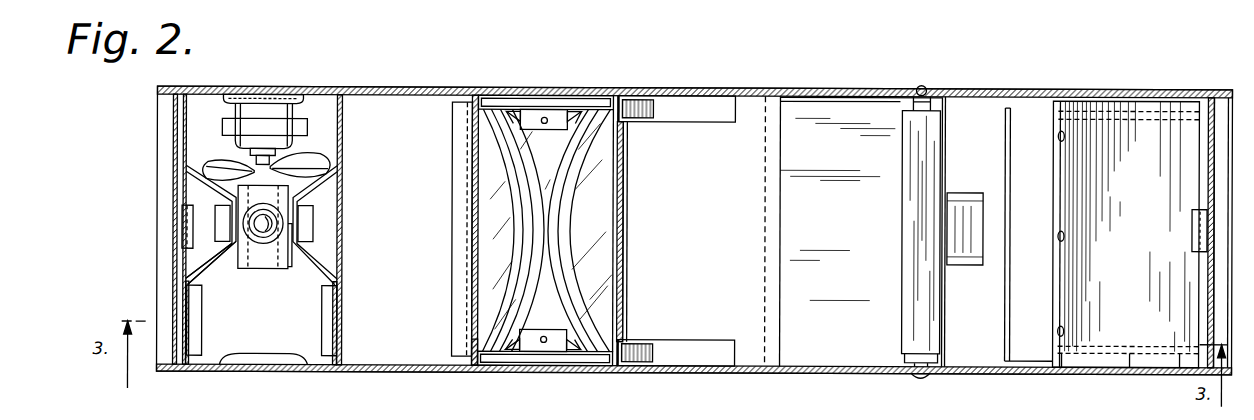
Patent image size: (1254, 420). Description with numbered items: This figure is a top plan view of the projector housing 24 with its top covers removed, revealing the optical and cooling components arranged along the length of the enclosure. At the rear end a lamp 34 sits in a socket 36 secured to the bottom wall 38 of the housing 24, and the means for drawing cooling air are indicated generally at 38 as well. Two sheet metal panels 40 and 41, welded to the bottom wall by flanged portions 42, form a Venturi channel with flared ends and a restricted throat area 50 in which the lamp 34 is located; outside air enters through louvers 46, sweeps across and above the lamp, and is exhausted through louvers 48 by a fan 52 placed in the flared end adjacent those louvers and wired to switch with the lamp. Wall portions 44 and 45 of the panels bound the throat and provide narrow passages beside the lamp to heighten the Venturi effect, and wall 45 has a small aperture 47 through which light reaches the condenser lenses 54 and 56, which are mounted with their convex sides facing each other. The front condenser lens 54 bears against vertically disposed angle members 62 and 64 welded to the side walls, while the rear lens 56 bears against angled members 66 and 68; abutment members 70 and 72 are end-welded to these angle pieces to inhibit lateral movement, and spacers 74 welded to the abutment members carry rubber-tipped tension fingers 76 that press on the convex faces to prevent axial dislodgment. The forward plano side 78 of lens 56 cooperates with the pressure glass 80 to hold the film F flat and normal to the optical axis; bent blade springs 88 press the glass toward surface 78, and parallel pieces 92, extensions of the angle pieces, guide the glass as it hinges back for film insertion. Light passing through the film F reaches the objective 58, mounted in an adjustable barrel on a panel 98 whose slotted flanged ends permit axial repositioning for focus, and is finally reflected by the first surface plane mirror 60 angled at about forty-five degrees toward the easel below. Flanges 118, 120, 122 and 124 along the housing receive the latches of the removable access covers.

The projector housing 24 is at (842, 82).
The lamp 34 is at (262, 240).
The socket 36 is at (285, 197).
The bottom wall / air-current means 38 is at (343, 262).
The sheet metal panel 40 is at (190, 337).
The sheet metal panel 41 is at (338, 340).
The flanged portions 42 is at (193, 141).
The wall portion 44 is at (300, 247).
The wall portion 45 is at (235, 240).
The louvers 46 is at (288, 346).
The aperture 47 is at (315, 222).
The louvers 48 is at (240, 92).
The restricted throat area 50 is at (290, 270).
The fan 52 is at (296, 128).
The plano-convex condenser lens 54 is at (506, 231).
The plano-convex condenser lens 56 is at (606, 231).
The objective 58 is at (965, 200).
The first surface plane mirror 60 is at (1142, 187).
The angle member 62 is at (472, 98).
The angle member 64 is at (474, 365).
The angled member 66 is at (623, 97).
The angled member 68 is at (628, 365).
The abutment member 70 is at (500, 355).
The abutment member 72 is at (490, 103).
The spacers 74 is at (532, 108).
The tension fingers 76 is at (575, 112).
The forward plano side 78 is at (620, 185).
The pressure glass 80 is at (628, 215).
The bent blade springs 88 is at (640, 100).
The parallel pieces 92 is at (708, 122).
The panel 98 is at (945, 132).
The flange 118 is at (181, 228).
The flange 120 is at (462, 222).
The flange 122 is at (778, 194).
The flange 124 is at (1192, 237).
The film F is at (622, 277).